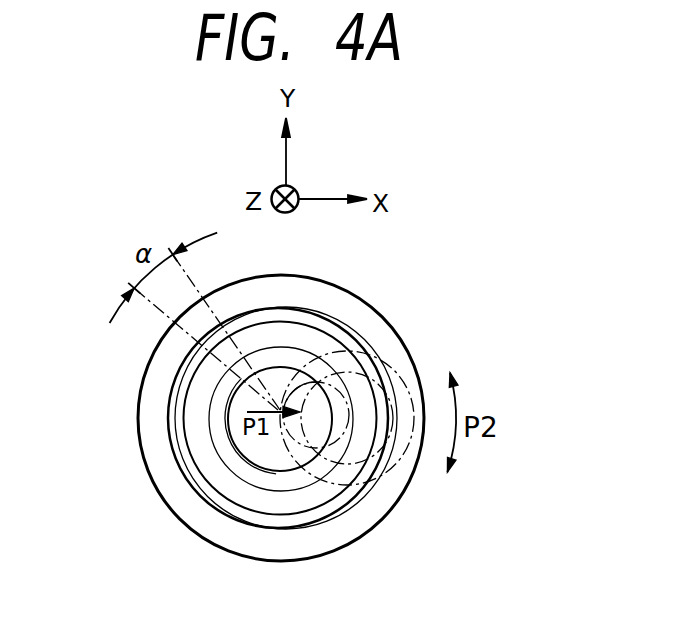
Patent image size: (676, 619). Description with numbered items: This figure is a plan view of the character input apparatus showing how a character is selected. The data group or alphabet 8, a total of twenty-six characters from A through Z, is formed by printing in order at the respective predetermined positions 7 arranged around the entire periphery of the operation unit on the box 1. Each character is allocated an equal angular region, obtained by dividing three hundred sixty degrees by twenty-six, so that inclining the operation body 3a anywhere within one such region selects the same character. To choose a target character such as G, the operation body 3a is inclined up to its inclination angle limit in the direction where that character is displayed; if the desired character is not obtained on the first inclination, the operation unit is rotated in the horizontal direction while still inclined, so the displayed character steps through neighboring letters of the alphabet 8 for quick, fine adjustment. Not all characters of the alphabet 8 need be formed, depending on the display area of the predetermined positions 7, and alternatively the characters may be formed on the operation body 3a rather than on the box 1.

The box 1 is at (170, 507).
The operation body 3a is at (215, 403).
The predetermined positions 7 is at (366, 296).
The data group (alphabet) 8 is at (403, 354).